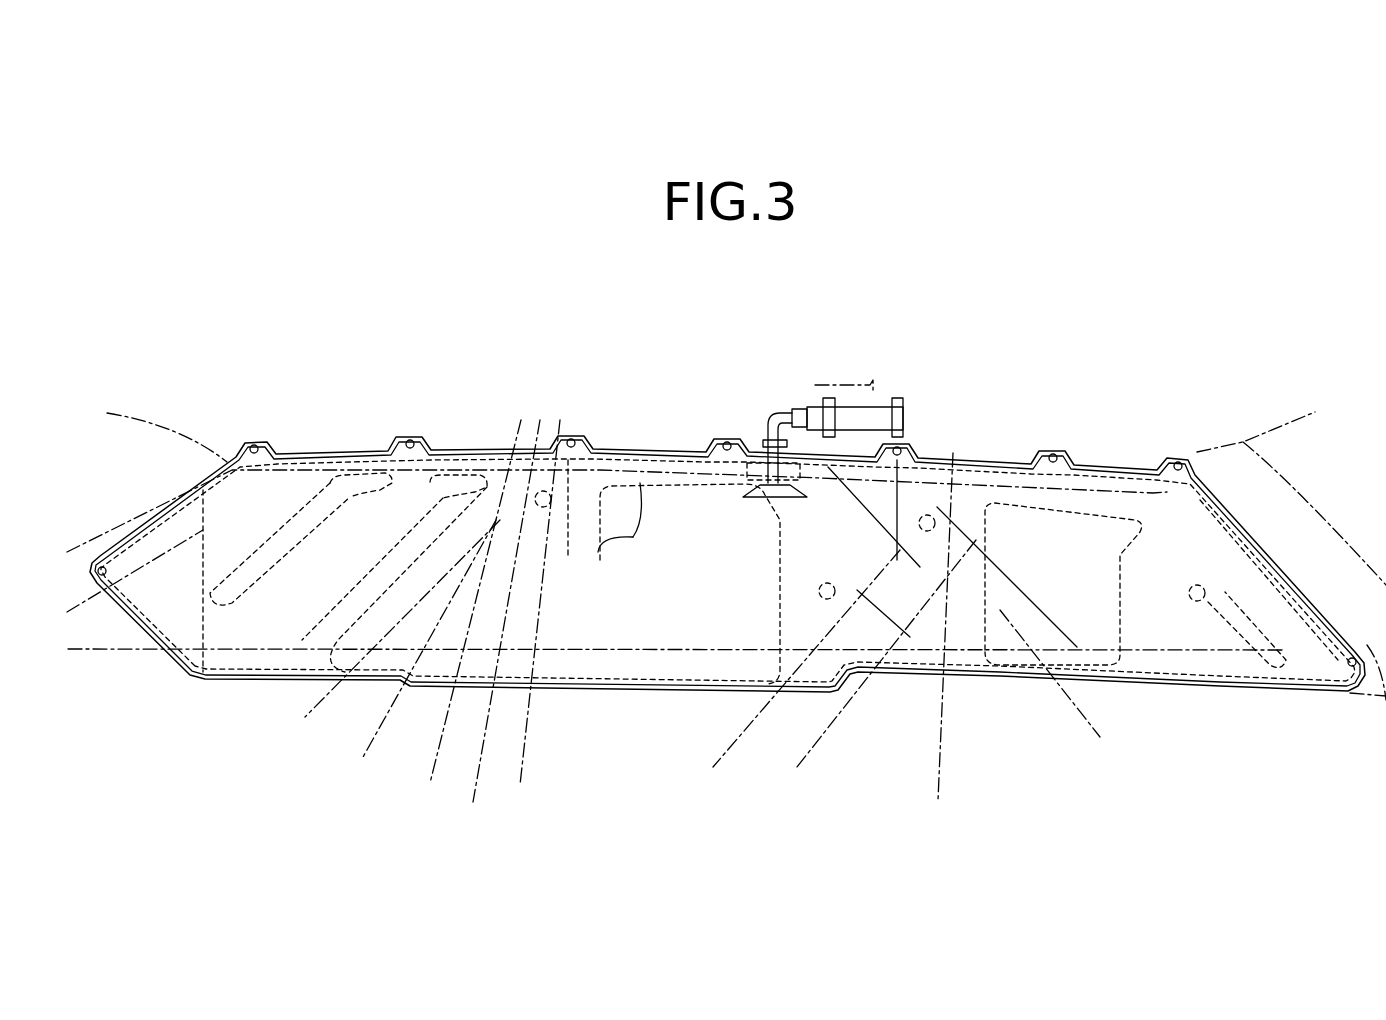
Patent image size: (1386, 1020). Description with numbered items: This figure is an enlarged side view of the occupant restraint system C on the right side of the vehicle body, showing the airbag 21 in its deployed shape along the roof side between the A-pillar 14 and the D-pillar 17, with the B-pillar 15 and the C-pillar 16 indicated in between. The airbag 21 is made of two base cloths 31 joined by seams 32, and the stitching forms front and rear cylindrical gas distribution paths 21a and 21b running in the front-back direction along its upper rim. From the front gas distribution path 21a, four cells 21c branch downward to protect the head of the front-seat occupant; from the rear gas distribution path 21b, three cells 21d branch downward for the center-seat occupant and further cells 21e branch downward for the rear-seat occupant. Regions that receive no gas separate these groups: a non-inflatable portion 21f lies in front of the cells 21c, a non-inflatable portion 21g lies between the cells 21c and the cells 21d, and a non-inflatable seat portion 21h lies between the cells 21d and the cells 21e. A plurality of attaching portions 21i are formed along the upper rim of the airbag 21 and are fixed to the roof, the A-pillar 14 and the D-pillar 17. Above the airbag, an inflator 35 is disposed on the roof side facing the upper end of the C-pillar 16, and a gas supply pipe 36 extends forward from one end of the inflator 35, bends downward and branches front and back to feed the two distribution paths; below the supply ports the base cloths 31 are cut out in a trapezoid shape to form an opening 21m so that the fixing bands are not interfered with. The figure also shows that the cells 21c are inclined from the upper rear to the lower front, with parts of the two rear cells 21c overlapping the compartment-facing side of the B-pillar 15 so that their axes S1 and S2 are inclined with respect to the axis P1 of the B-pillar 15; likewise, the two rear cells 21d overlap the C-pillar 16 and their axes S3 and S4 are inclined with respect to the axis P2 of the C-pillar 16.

The A-pillar 14 is at (167, 500).
The B-pillar 15 is at (540, 607).
The C-pillar 16 is at (1007, 592).
The D-pillar 17 is at (1305, 507).
The airbag 21 is at (578, 695).
The front gas distribution path 21a is at (481, 462).
The rear gas distribution path 21b is at (1007, 477).
The cells 21c is at (235, 546).
The cells 21d is at (792, 571).
The cells 21e is at (1142, 636).
The non-inflatable portion 21f is at (140, 603).
The non-inflatable portion 21g is at (665, 598).
The non-inflatable seat portion 21h is at (1050, 591).
The attaching portions 21i is at (252, 445).
The opening 21m is at (760, 500).
The base cloths 31 is at (667, 650).
The seams 32 is at (613, 448).
The inflator 35 is at (880, 407).
The gas supply pipe 36 is at (776, 420).
The occupant restraint system C is at (963, 347).
The axis of the B-pillar P1 is at (473, 780).
The axis of the C-pillar P2 is at (1070, 715).
The axis of cell S1 is at (470, 550).
The axis of cell S2 is at (407, 718).
The axis of cell S3 is at (798, 658).
The axis of cell S4 is at (840, 717).